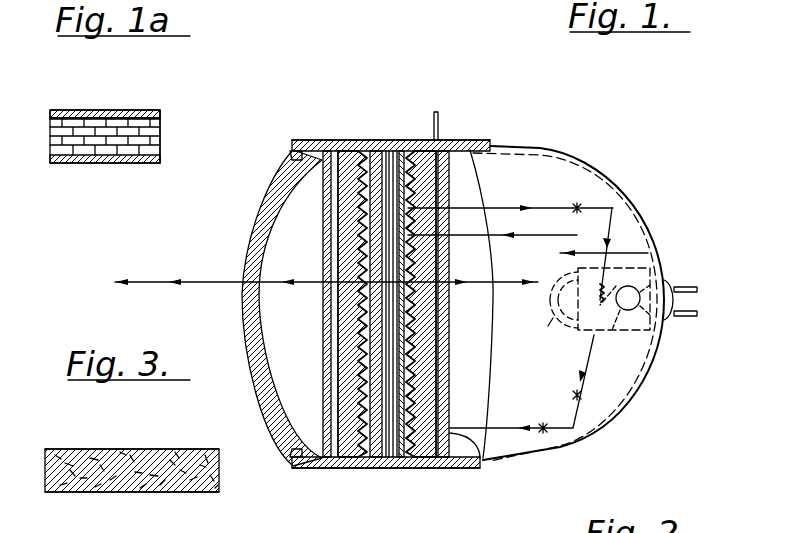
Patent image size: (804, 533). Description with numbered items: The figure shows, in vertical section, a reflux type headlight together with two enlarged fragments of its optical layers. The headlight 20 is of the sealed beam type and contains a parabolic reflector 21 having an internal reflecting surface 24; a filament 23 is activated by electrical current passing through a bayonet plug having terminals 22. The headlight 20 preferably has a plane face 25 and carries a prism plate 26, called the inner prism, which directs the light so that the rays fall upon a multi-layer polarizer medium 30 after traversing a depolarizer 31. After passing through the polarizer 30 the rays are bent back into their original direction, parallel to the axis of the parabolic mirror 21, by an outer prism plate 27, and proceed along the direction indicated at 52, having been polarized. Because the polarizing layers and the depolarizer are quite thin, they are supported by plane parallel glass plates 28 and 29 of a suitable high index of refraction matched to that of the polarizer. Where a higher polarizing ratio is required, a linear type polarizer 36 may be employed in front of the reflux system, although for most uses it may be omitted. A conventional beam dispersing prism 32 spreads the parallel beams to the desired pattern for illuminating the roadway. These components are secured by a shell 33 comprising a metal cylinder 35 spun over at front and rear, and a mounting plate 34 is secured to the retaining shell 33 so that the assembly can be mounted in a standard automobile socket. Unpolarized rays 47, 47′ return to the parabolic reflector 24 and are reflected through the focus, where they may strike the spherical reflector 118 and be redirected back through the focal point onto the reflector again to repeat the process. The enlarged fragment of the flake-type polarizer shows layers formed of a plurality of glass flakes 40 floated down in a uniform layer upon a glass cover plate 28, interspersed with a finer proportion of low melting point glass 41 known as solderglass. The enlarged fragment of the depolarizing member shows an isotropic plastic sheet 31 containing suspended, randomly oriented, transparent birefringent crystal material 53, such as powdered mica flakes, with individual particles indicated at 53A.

In FIG. 1, the headlight 20 is at (568, 163).
In FIG. 1, the parabolic reflector 21 is at (612, 210).
In FIG. 1, the terminals 22 is at (697, 287).
In FIG. 1, the filament 23 is at (630, 332).
In FIG. 1, the internal reflecting surface 24 is at (614, 392).
In FIG. 1, the plane face 25 is at (480, 458).
In FIG. 1, the prism plate 26 is at (435, 468).
In FIG. 1, the outer prism plate 27 is at (360, 468).
In FIG. 1A, the glass plate 28 is at (160, 163).
In FIG. 1, the glass plate 28 is at (347, 145).
In FIG. 1A, the glass plate 29 is at (128, 108).
In FIG. 1, the glass plate 29 is at (452, 147).
In FIG. 1, the multi-layer polarizer medium 30 is at (383, 146).
In FIG. 3, the depolarizer 31 is at (147, 448).
In FIG. 1, the depolarizer 31 is at (395, 148).
In FIG. 1, the beam dispersing prism 32 is at (250, 347).
In FIG. 1, the shell 33 is at (473, 143).
In FIG. 1, the mounting plate 34 is at (440, 148).
In FIG. 1, the metal cylinder 35 is at (477, 140).
In FIG. 1, the linear type polarizer 36 is at (322, 340).
In FIG. 1A, the glass flakes 40 is at (160, 118).
In FIG. 1A, the low melting point glass 41 is at (137, 110).
In FIG. 1, the unpolarized ray 47 is at (502, 277).
In FIG. 1, the unpolarized ray 47′ is at (510, 198).
In FIG. 1, the direction of polarized rays 52 is at (130, 281).
In FIG. 3, the crystal material 53 is at (90, 448).
In FIG. 3, the fibers 53A is at (57, 492).
In FIG. 1, the spherical reflector 118 is at (553, 318).